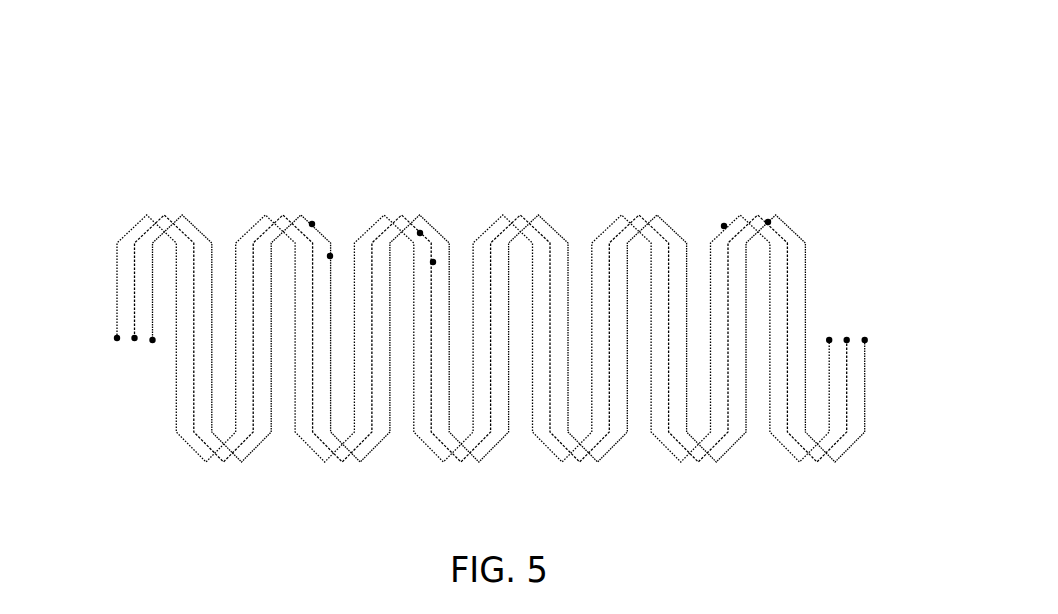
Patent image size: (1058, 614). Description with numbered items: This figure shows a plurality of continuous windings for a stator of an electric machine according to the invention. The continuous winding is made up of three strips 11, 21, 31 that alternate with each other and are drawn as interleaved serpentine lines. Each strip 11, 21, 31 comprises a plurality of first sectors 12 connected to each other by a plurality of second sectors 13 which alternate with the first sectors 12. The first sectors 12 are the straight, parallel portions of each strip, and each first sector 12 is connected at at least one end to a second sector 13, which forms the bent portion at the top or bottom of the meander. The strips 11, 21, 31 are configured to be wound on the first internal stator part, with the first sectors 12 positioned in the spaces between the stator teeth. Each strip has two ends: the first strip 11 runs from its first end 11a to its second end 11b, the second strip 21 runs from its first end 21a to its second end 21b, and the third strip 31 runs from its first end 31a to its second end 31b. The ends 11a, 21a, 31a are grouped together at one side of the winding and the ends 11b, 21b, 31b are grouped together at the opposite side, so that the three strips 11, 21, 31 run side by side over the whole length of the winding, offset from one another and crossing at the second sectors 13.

The strip 11 is at (146, 212).
The strip 21 is at (164, 212).
The strip 31 is at (182, 210).
The first end of first wire 11a is at (117, 338).
The first end of second wire 21a is at (134, 338).
The first end of third wire 31a is at (152, 340).
The second end of first wire 11b is at (829, 340).
The second end of second wire 21b is at (847, 340).
The second end of third wire 31b is at (865, 340).
The first sector 12 is at (330, 256).
The second sector 13 is at (312, 224).